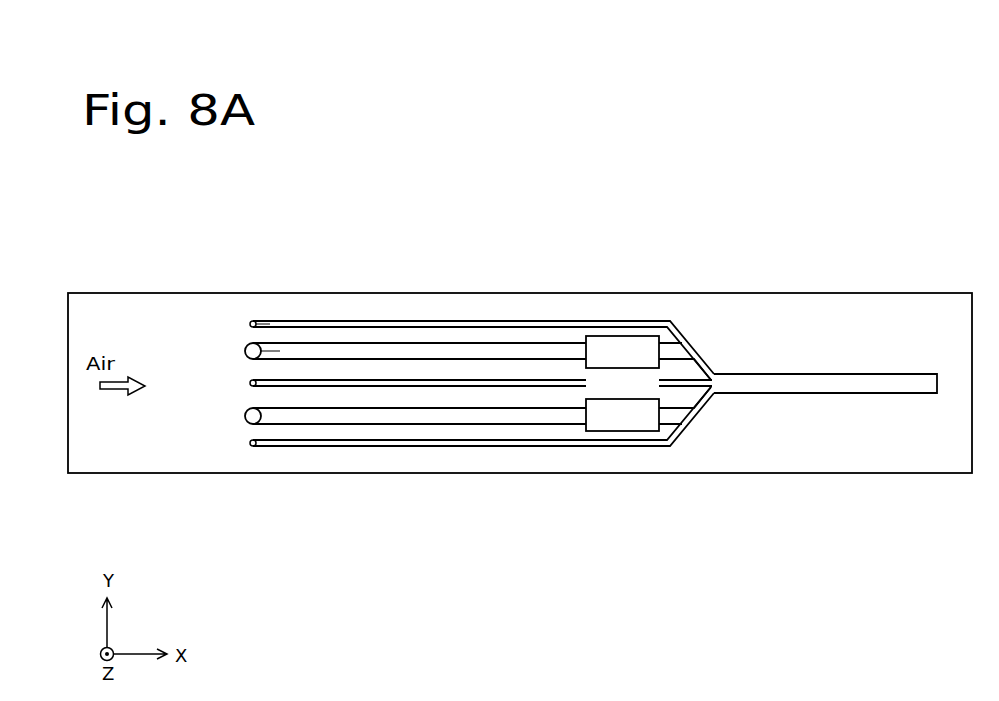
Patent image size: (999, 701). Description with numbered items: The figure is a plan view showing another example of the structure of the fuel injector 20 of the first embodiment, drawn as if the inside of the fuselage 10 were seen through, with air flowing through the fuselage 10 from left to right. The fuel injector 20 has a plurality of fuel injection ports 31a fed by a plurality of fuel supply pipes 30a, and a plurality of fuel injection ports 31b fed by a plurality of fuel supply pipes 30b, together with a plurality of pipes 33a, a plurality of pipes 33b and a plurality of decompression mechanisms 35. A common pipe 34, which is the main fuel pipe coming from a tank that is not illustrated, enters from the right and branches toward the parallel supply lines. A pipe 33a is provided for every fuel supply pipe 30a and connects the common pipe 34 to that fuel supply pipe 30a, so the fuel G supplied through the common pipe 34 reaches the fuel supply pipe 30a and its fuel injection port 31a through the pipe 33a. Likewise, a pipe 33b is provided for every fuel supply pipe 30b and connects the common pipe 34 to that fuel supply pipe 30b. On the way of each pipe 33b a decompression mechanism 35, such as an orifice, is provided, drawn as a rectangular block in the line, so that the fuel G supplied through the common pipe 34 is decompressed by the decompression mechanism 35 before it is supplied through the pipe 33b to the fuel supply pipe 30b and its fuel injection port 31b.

The fuselage 10 is at (784, 303).
The fuel injector 20 is at (316, 243).
The fuel supply pipe 30a is at (262, 323).
The fuel supply pipe 30b is at (266, 353).
The fuel injection port 31a is at (251, 321).
The fuel injection port 31b is at (256, 357).
The pipe 33a is at (298, 320).
The pipe 33b is at (418, 352).
The common pipe 34 is at (845, 374).
The decompression mechanism 35 is at (632, 408).